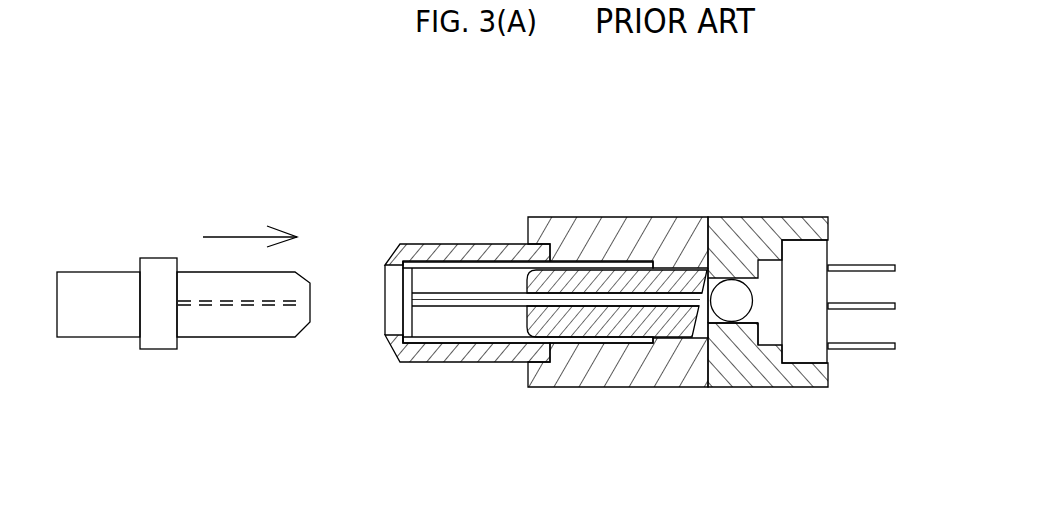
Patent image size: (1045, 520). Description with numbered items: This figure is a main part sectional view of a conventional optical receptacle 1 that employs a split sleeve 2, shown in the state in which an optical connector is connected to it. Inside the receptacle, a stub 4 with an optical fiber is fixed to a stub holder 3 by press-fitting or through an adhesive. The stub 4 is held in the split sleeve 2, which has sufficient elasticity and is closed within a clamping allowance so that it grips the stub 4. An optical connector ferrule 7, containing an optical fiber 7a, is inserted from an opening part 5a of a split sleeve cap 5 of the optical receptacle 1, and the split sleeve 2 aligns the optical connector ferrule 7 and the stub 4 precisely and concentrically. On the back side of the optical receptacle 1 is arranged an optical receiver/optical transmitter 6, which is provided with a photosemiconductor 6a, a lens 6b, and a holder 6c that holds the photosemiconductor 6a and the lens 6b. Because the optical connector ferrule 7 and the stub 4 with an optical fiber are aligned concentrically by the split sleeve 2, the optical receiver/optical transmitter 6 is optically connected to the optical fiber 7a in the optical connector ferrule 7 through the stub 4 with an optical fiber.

The optical receptacle 1 is at (612, 280).
The split sleeve 2 is at (446, 270).
The stub holder 3 is at (626, 218).
The stub with an optical fiber 4 is at (524, 332).
The split sleeve cap 5 is at (440, 255).
The opening part 5a is at (383, 282).
The optical receiver/optical transmitter 6 is at (797, 280).
The photosemiconductor 6a is at (810, 260).
The lens 6b is at (733, 290).
The holder 6c is at (750, 383).
The optical connector ferrule 7 is at (183, 278).
The optical fiber 7a is at (247, 306).